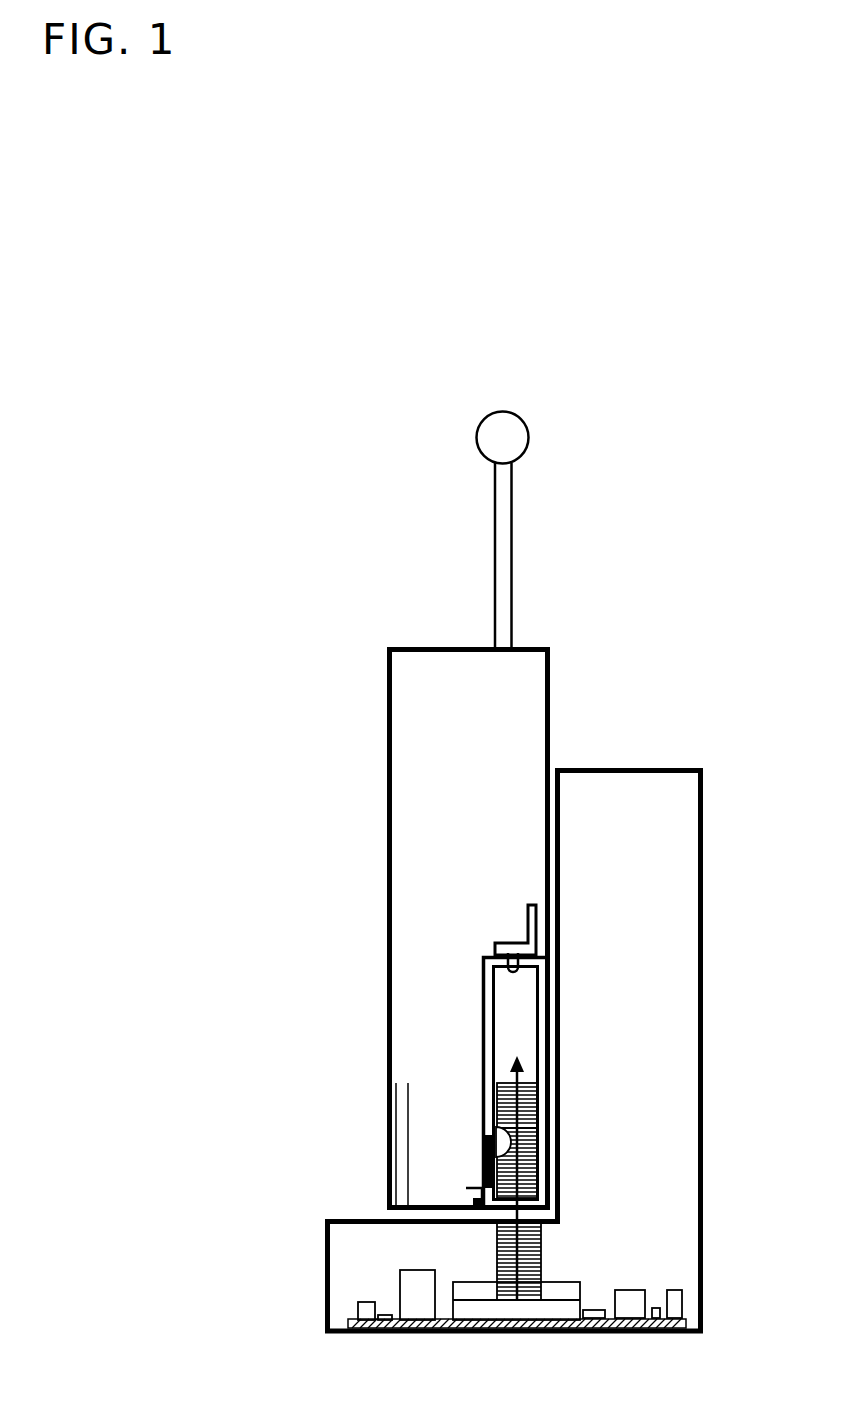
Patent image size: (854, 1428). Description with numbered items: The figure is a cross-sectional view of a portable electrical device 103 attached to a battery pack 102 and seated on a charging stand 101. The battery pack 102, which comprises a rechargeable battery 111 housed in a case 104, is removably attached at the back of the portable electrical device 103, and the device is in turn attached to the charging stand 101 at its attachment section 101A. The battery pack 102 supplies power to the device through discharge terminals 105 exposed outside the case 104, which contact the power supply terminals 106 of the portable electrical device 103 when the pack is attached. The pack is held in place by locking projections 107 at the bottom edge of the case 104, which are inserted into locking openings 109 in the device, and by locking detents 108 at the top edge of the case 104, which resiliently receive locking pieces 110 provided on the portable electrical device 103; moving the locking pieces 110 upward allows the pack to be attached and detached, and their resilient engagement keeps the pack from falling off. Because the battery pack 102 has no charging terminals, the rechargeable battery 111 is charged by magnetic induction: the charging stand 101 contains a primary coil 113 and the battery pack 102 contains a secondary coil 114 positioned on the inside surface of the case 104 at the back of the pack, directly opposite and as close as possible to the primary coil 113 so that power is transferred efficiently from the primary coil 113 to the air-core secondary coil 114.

The charging stand 101 is at (683, 912).
The attachment section 101A is at (557, 760).
The battery pack 102 is at (551, 1020).
The portable electrical device 103 is at (410, 758).
The case 104 is at (540, 1168).
The discharge terminals 105 is at (500, 1142).
The power supply terminals 106 is at (476, 1150).
The locking projections 107 is at (466, 1190).
The locking detents 108 is at (522, 986).
The locking openings 109 is at (477, 1179).
The locking pieces 110 is at (512, 955).
The rechargeable battery 111 is at (506, 1010).
The primary coil 113 is at (525, 1280).
The secondary coil 114 is at (540, 1128).